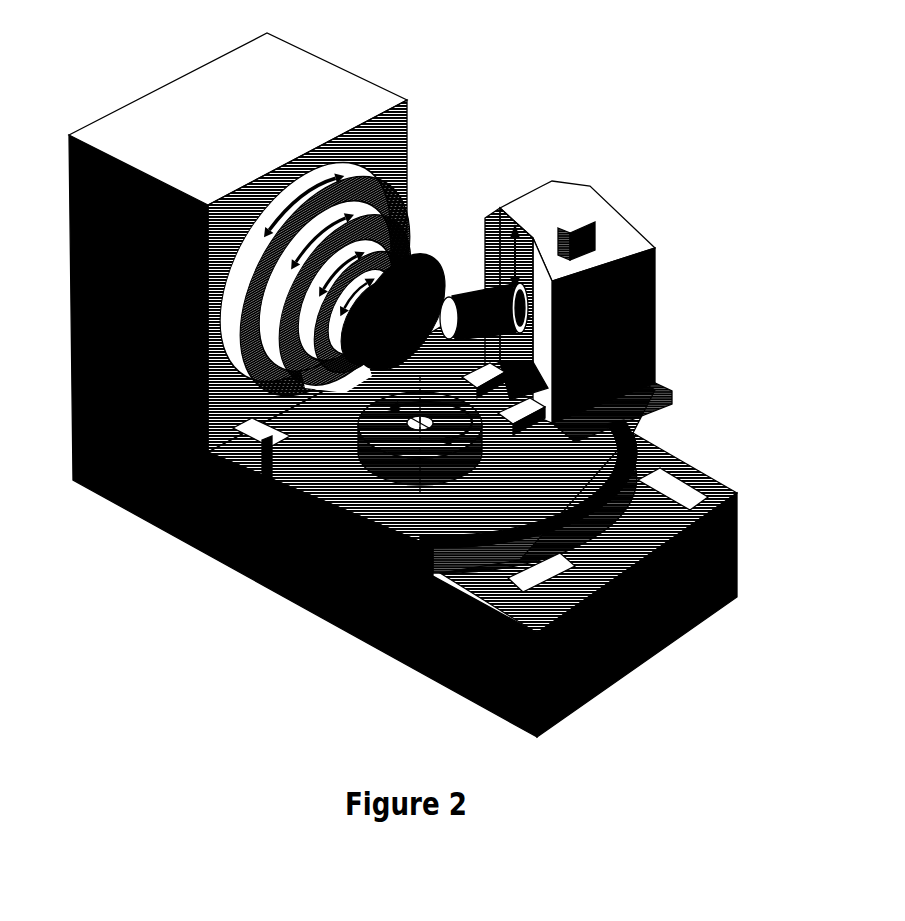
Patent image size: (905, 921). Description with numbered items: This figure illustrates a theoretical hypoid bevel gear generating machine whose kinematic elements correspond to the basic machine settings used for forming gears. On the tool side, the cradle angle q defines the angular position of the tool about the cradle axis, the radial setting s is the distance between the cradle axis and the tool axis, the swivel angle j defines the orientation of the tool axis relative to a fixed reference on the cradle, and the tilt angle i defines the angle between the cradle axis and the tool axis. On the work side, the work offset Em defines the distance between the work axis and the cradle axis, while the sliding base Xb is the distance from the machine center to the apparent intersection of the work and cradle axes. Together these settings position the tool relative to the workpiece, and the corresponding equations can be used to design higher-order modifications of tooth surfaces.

The cradle angle q is at (350, 167).
The radial setting s is at (285, 257).
The swivel angle j is at (360, 232).
The tilt angle i is at (407, 250).
The work offset Em is at (540, 240).
The sliding base Xb is at (412, 611).